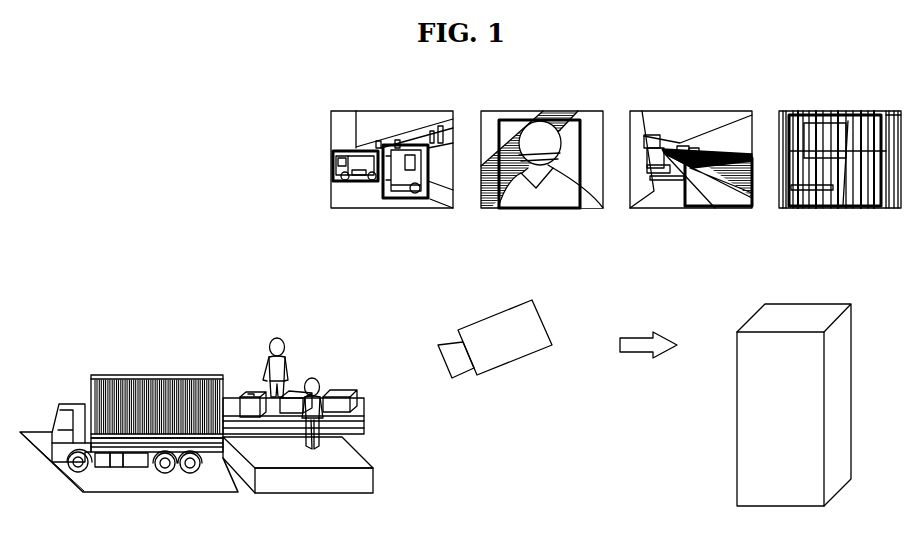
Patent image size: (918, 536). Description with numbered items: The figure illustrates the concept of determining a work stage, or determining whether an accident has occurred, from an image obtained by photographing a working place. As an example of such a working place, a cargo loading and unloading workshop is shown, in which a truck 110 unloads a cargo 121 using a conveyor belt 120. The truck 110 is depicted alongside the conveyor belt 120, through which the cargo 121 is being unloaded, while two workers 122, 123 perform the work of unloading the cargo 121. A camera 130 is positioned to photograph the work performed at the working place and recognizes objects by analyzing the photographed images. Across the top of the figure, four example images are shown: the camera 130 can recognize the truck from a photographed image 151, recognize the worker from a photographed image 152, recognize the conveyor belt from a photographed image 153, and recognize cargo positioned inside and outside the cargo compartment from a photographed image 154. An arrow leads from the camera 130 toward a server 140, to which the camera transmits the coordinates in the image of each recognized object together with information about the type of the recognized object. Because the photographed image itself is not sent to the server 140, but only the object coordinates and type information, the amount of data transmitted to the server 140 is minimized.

The truck 110 is at (157, 375).
The conveyor belt 120 is at (364, 409).
The cargo 121 is at (342, 392).
The worker 122 is at (313, 378).
The worker 123 is at (277, 337).
The camera 130 is at (492, 315).
The server 140 is at (798, 304).
The photographed image 151 is at (390, 110).
The photographed image 152 is at (540, 110).
The photographed image 153 is at (690, 110).
The photographed image 154 is at (840, 110).